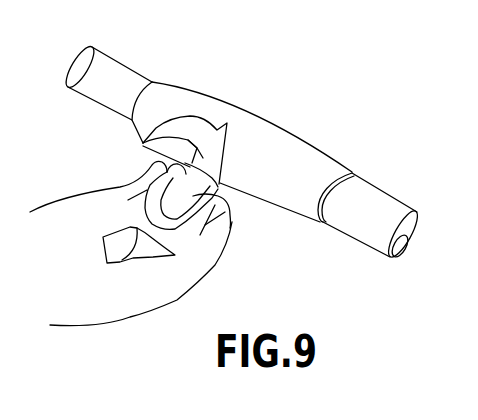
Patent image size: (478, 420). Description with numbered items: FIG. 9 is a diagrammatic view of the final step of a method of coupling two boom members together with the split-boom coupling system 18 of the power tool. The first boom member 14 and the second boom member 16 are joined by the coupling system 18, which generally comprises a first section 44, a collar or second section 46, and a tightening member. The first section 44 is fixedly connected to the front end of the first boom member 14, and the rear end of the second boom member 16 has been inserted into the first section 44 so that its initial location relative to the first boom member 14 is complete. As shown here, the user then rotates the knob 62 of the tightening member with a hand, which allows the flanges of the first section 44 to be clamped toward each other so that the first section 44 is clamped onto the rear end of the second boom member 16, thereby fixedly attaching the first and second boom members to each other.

The first boom member 14 is at (383, 190).
The second boom member 16 is at (117, 61).
The coupling system 18 is at (247, 151).
The first section 44 is at (302, 135).
The collar or second section 46 is at (188, 87).
The handle or knob 62 is at (205, 213).